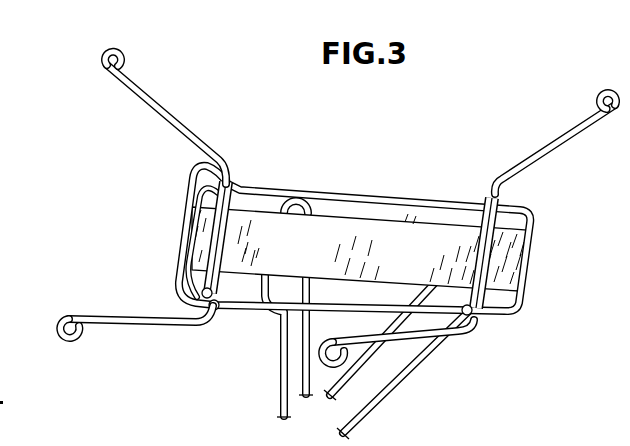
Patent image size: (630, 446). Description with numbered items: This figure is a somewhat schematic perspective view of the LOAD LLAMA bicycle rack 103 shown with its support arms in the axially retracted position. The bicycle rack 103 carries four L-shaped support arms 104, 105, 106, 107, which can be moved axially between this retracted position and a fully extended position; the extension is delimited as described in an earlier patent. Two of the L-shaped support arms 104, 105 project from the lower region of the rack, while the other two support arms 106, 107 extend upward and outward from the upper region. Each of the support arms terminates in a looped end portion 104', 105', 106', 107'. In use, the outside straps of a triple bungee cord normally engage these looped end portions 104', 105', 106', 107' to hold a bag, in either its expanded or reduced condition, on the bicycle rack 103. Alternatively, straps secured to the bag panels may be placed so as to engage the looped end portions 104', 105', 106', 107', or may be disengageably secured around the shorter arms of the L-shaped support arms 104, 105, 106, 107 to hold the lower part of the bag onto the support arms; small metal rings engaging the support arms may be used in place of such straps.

The bicycle rack 103 is at (368, 170).
The L-shaped support arm 104 is at (141, 342).
The looped end portion 104' is at (82, 302).
The L-shaped support arm 105 is at (406, 358).
The looped end portion 105' is at (280, 371).
The L-shaped support arm 106 is at (547, 149).
The looped end portion 106' is at (578, 90).
The L-shaped support arm 107 is at (186, 124).
The looped end portion 107' is at (69, 67).